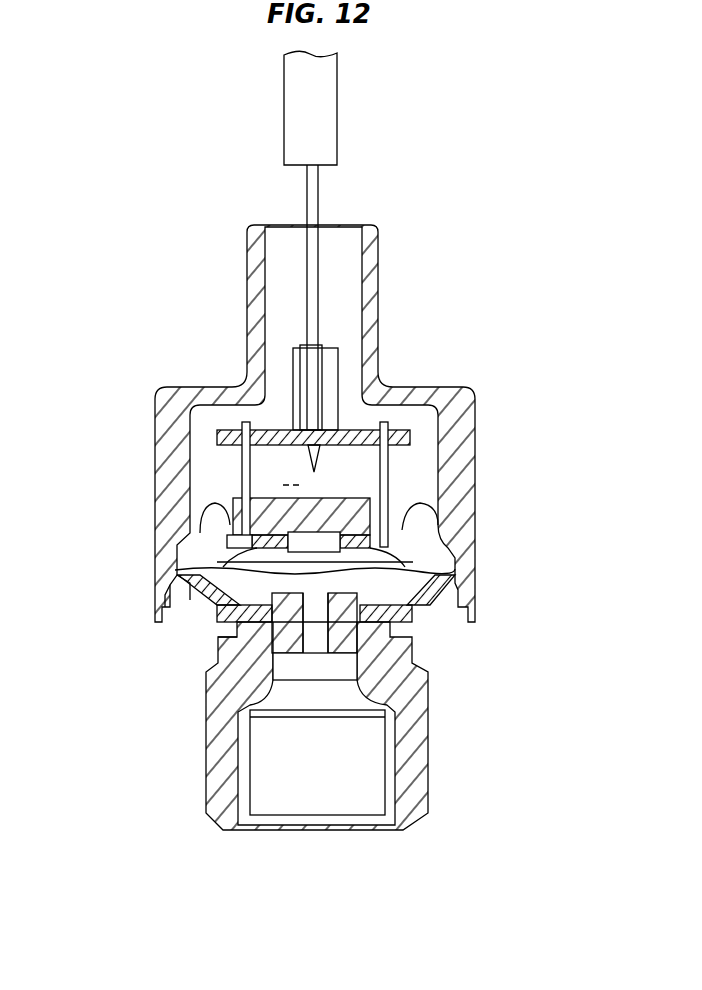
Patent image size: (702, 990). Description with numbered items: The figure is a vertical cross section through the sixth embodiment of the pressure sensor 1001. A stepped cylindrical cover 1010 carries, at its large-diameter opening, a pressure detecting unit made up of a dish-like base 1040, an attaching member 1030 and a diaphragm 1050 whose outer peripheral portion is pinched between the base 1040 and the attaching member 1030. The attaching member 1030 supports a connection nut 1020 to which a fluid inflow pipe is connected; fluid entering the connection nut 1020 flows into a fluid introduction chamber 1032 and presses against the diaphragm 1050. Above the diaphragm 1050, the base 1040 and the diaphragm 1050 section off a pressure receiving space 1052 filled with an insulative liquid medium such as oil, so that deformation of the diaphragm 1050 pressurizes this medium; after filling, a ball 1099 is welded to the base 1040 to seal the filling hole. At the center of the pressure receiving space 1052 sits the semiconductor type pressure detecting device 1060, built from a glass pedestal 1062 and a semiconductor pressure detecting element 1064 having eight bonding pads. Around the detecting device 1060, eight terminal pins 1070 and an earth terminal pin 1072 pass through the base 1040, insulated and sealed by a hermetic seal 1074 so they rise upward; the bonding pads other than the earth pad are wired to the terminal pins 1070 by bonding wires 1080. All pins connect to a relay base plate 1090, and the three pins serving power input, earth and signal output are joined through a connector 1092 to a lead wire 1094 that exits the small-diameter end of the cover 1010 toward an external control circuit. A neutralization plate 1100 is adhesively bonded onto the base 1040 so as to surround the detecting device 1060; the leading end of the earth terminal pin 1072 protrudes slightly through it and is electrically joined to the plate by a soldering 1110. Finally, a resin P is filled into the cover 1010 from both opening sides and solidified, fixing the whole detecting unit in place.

The pressure sensor 1001 is at (486, 284).
The cover 1010 is at (460, 458).
The connection nut 1020 is at (418, 753).
The attaching member 1030 is at (230, 610).
The fluid introduction chamber 1032 is at (225, 620).
The base 1040 is at (422, 532).
The diaphragm 1050 is at (210, 622).
The pressure receiving space 1052 is at (440, 607).
The semiconductor type pressure detecting device 1060 is at (386, 568).
The glass pedestal 1062 is at (292, 536).
The pressure detecting element 1064 is at (318, 553).
The terminal pin 1070 is at (386, 490).
The earth terminal pin 1072 is at (246, 463).
The hermetic seal 1074 is at (233, 523).
The bonding wire 1080 is at (392, 568).
The relay base plate 1090 is at (410, 428).
The connector 1092 is at (313, 373).
The lead wire 1094 is at (313, 190).
The ball 1099 is at (283, 485).
The neutralization plate 1100 is at (178, 577).
The soldering 1110 is at (180, 565).
The resin P is at (347, 288).